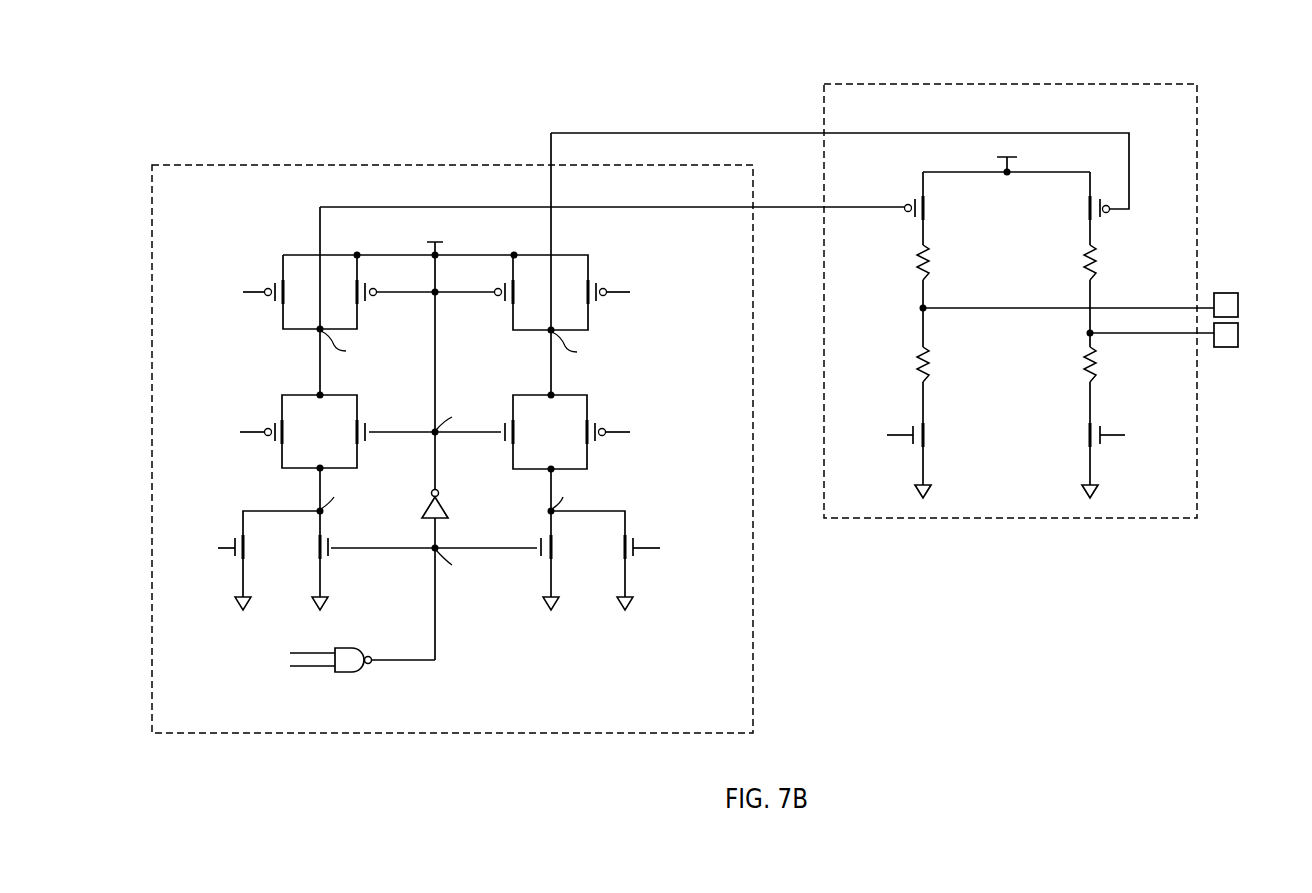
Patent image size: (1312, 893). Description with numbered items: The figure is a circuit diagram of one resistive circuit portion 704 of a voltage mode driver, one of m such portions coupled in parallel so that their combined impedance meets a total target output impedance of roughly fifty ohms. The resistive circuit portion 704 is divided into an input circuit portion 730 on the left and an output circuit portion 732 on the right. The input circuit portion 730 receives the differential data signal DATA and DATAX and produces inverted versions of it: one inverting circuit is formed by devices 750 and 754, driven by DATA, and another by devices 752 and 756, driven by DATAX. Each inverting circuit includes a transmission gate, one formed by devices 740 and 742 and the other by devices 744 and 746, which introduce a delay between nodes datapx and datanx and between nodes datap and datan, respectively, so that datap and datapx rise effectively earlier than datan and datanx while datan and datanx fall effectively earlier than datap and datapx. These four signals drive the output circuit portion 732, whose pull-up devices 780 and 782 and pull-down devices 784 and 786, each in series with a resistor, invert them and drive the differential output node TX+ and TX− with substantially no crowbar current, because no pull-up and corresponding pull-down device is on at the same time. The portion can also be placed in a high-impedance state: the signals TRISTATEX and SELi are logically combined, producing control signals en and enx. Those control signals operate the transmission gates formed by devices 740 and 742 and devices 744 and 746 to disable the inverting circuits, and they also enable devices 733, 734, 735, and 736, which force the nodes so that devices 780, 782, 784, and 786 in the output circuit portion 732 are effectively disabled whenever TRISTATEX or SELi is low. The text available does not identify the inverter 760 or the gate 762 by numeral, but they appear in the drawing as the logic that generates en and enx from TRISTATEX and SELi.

The resistive circuit portion 704 is at (193, 83).
The input circuit portion 730 is at (640, 433).
The output circuit portion 732 is at (1024, 301).
The device 733 is at (366, 303).
The device 734 is at (504, 303).
The device 735 is at (329, 557).
The device 736 is at (540, 537).
The device 740 is at (284, 433).
The device 742 is at (366, 421).
The device 744 is at (515, 433).
The device 746 is at (596, 421).
The device 750 is at (277, 281).
The device 752 is at (597, 281).
The device 754 is at (236, 536).
The device 756 is at (634, 536).
The inverter 760 is at (441, 502).
The NAND gate 762 is at (366, 666).
The device 780 is at (930, 211).
The device 782 is at (1086, 211).
The device 784 is at (925, 431).
The device 786 is at (1101, 421).